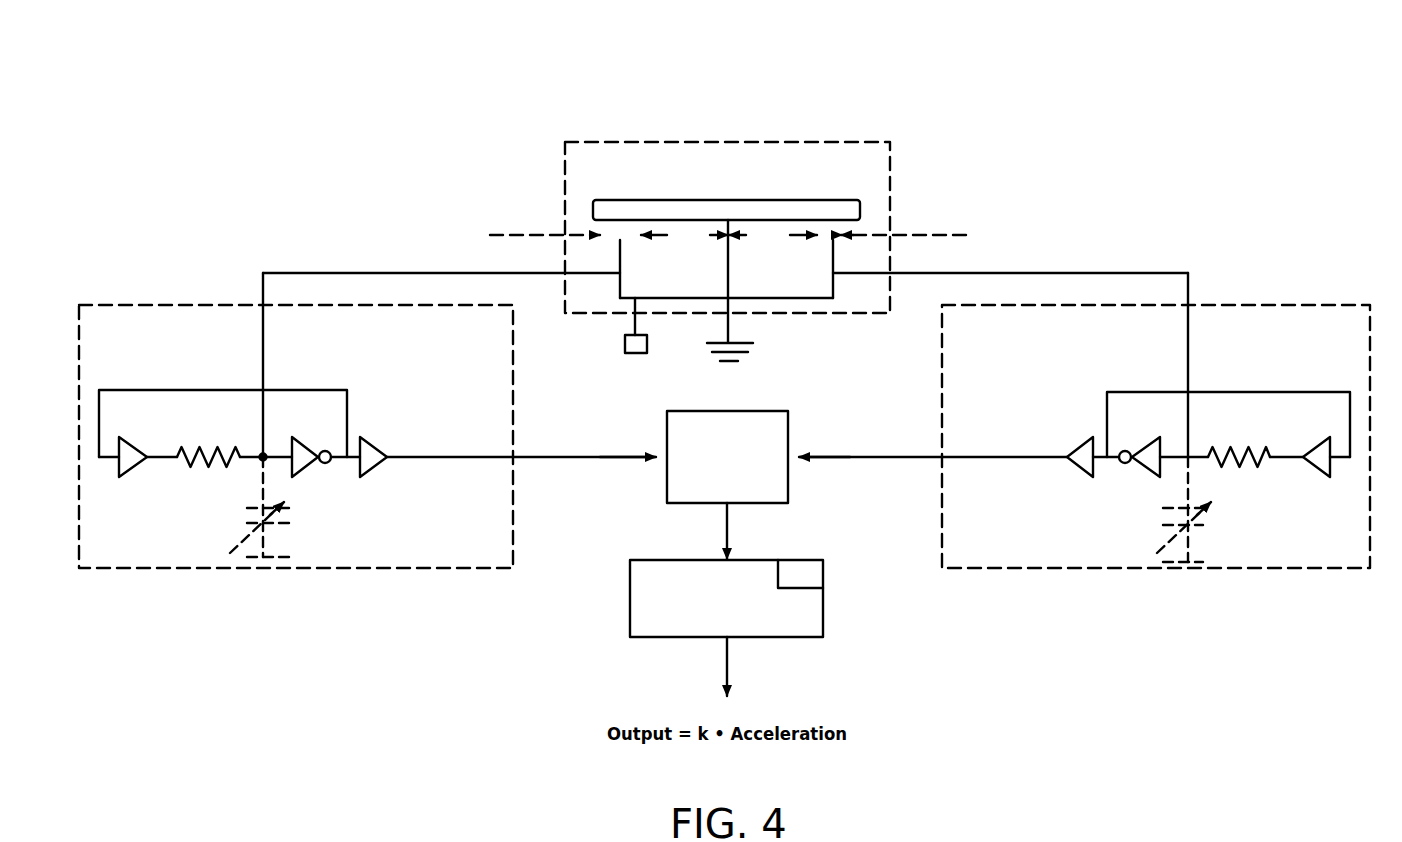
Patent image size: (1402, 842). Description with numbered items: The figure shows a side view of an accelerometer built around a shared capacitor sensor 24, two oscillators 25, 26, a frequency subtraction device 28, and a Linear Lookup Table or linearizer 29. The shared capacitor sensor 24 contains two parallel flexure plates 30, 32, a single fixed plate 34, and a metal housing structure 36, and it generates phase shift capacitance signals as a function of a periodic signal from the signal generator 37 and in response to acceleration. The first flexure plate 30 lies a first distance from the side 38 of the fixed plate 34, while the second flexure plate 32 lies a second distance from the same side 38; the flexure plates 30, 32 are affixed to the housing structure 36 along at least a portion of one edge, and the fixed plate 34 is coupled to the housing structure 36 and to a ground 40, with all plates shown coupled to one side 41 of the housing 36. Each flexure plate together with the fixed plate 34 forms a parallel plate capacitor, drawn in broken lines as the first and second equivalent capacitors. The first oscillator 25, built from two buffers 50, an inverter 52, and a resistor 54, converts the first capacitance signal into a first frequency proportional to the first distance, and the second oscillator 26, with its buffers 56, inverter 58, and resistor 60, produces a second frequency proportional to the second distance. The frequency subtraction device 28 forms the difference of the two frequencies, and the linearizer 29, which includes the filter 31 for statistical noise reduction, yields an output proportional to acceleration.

The shared capacitor sensor 24 is at (729, 180).
The first oscillator 25 is at (367, 417).
The second oscillator 26 is at (1084, 414).
The frequency subtraction device 28 is at (710, 411).
The linearizer 29 is at (752, 582).
The first flexure plate 30 is at (620, 240).
The filter 31 is at (823, 580).
The second flexure plate 32 is at (835, 240).
The fixed plate 34 is at (827, 203).
The metal housing structure 36 is at (567, 142).
The signal generator 37 is at (636, 353).
The side of the fixed plate 38 is at (700, 220).
The ground 40 is at (717, 340).
The side of the housing 41 is at (607, 167).
The buffers 50 is at (127, 472).
The inverter 52 is at (297, 440).
The resistor 54 is at (233, 435).
The buffers 56 is at (1080, 437).
The inverter 58 is at (1163, 415).
The resistor 60 is at (1260, 435).